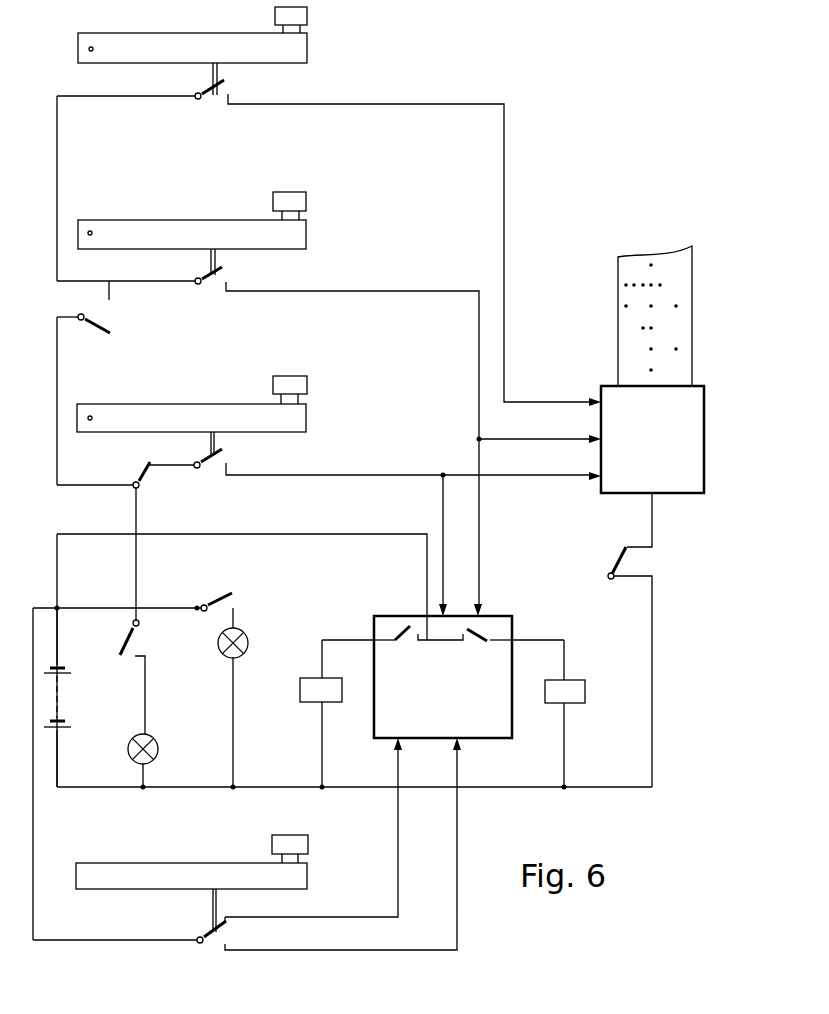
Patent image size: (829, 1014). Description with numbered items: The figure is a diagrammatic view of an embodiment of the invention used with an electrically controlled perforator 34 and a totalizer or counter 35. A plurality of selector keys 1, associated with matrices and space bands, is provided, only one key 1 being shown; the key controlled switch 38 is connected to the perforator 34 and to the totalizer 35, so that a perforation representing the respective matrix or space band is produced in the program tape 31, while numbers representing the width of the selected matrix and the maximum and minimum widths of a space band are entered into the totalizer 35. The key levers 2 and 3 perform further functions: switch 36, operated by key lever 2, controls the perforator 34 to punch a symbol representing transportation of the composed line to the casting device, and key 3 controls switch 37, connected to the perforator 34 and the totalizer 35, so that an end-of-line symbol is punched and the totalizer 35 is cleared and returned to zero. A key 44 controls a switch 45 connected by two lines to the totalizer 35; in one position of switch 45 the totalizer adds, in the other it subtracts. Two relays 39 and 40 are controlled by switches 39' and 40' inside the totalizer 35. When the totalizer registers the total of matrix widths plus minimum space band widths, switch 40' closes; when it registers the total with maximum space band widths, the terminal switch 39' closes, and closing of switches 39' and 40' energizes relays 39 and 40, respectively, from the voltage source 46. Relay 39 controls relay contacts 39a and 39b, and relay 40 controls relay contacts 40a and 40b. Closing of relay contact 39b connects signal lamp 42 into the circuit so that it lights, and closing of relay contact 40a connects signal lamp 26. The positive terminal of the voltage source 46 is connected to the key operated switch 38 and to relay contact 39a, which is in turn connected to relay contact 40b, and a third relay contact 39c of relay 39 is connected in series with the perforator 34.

The selector key 1 is at (296, 420).
The key lever 2 is at (292, 51).
The key lever 3 is at (292, 235).
The signal lamp 26 is at (158, 749).
The program tape 31 is at (623, 344).
The perforator 34 is at (652, 439).
The totalizer 35 is at (443, 677).
The switch 36 is at (158, 81).
The switch 37 is at (157, 270).
The key controlled switch 38 is at (204, 451).
The relay 39 is at (332, 713).
The terminal switch 39' is at (401, 646).
The relay contact 39a is at (103, 533).
The relay contact 39b is at (242, 604).
The relay contact 39c is at (612, 640).
The relay 40 is at (578, 713).
The switch 40' is at (489, 648).
The relay contact 40a is at (152, 677).
The relay contact 40b is at (106, 324).
The signal lamp 42 is at (238, 652).
The key 44 is at (293, 878).
The switch 45 is at (149, 918).
The voltage source 46 is at (71, 697).